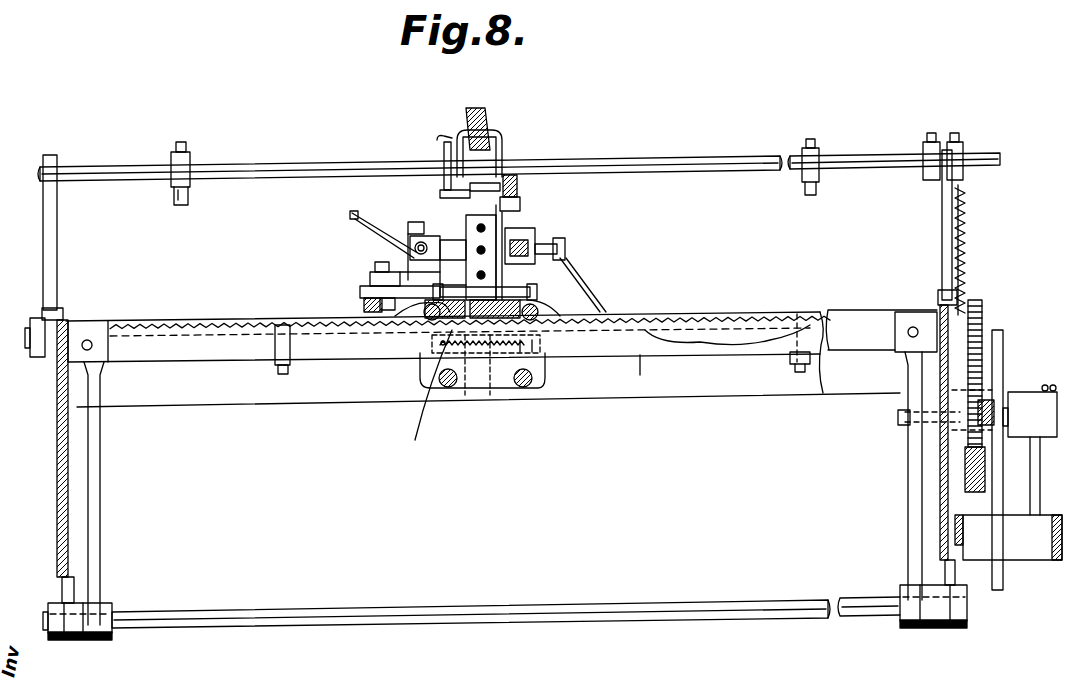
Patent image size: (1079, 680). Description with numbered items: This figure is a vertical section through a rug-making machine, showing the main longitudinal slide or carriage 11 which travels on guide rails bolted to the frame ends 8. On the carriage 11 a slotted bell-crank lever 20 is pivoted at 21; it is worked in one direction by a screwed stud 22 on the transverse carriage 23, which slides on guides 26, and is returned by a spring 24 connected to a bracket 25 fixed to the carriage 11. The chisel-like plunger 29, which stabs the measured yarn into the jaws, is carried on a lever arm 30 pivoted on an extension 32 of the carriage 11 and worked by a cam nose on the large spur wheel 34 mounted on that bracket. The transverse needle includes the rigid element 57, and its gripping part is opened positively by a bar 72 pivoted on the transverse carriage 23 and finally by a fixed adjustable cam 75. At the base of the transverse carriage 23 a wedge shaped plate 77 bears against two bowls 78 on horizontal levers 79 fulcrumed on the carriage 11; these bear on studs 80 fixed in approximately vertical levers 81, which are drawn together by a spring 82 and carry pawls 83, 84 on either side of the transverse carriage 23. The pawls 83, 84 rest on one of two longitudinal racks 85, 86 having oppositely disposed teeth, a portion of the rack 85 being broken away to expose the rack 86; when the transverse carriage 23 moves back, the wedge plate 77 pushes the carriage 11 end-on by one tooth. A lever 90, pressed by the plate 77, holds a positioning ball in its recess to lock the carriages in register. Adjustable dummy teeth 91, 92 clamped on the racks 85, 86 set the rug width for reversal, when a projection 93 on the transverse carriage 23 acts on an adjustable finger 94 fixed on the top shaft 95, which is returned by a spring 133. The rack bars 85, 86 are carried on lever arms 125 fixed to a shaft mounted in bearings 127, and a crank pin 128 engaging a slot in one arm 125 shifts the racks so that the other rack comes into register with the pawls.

The frame ends 8 is at (57, 520).
The slide or carriage 11 is at (372, 318).
The slotted bell-crank lever 20 is at (368, 226).
The pivot 21 is at (412, 222).
The screwed stud 22 is at (418, 240).
The transverse carriage 23 is at (488, 226).
The spring 24 is at (372, 280).
The bracket 25 is at (360, 292).
The guides 26 is at (472, 250).
The chisel-like plunger 29 is at (445, 165).
The lever arm 30 is at (478, 115).
The extension 32 is at (500, 150).
The large spur wheel 34 is at (520, 176).
The rigid element of transverse needle 57 is at (535, 240).
The bar 72 is at (560, 242).
The fixed adjustable cam 75 is at (565, 252).
The wedge shaped plate 77 is at (428, 394).
The bowls 78 is at (380, 296).
The levers 79 is at (537, 296).
The studs 80 is at (525, 295).
The levers 81 is at (528, 385).
The spring 82 is at (463, 352).
The pawl 83 is at (536, 332).
The pawl 84 is at (394, 310).
The rack 85 is at (644, 352).
The rack 86 is at (745, 320).
The lever 90 is at (488, 355).
The dummy tooth 91 is at (274, 350).
The dummy tooth 92 is at (800, 322).
The projection 93 is at (445, 193).
The adjustable finger 94 is at (178, 198).
The top shaft 95 is at (748, 166).
The lever arms 125 is at (96, 520).
The bearings 127 is at (62, 584).
The crank pin 128 is at (898, 418).
The spring 133 is at (966, 240).